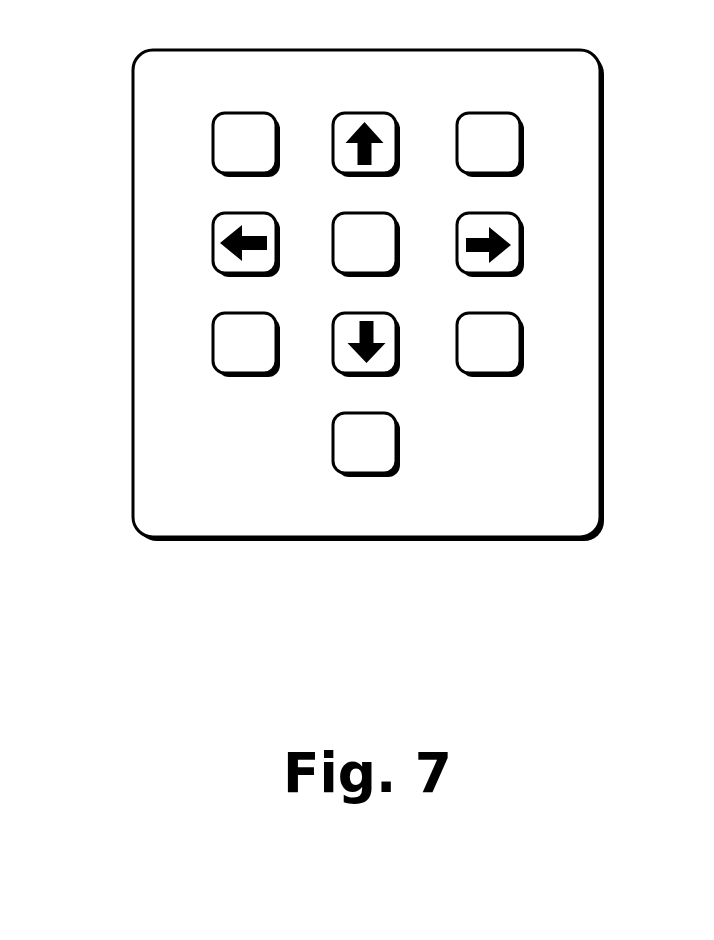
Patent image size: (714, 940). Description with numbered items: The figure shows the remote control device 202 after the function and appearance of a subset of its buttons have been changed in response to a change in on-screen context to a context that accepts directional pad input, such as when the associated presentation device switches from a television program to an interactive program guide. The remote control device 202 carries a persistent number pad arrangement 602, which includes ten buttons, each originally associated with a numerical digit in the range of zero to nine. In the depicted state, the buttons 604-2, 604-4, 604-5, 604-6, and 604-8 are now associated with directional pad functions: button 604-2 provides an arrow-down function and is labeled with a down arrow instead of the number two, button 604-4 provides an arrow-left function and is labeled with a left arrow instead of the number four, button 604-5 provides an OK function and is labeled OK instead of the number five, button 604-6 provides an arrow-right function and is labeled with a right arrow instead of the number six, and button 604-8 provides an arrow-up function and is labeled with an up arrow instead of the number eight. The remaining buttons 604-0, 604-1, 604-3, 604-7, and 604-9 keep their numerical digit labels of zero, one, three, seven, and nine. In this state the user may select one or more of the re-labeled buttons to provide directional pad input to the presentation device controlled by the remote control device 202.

The remote control device 202 is at (538, 49).
The persistent number pad arrangement 602 is at (180, 99).
The button 604-0 is at (368, 413).
The button 604-1 is at (246, 313).
The button 604-2 is at (368, 313).
The button 604-3 is at (490, 313).
The button 604-4 is at (246, 213).
The button 604-5 is at (368, 213).
The button 604-6 is at (490, 213).
The button 604-7 is at (246, 113).
The button 604-8 is at (368, 113).
The button 604-9 is at (490, 113).